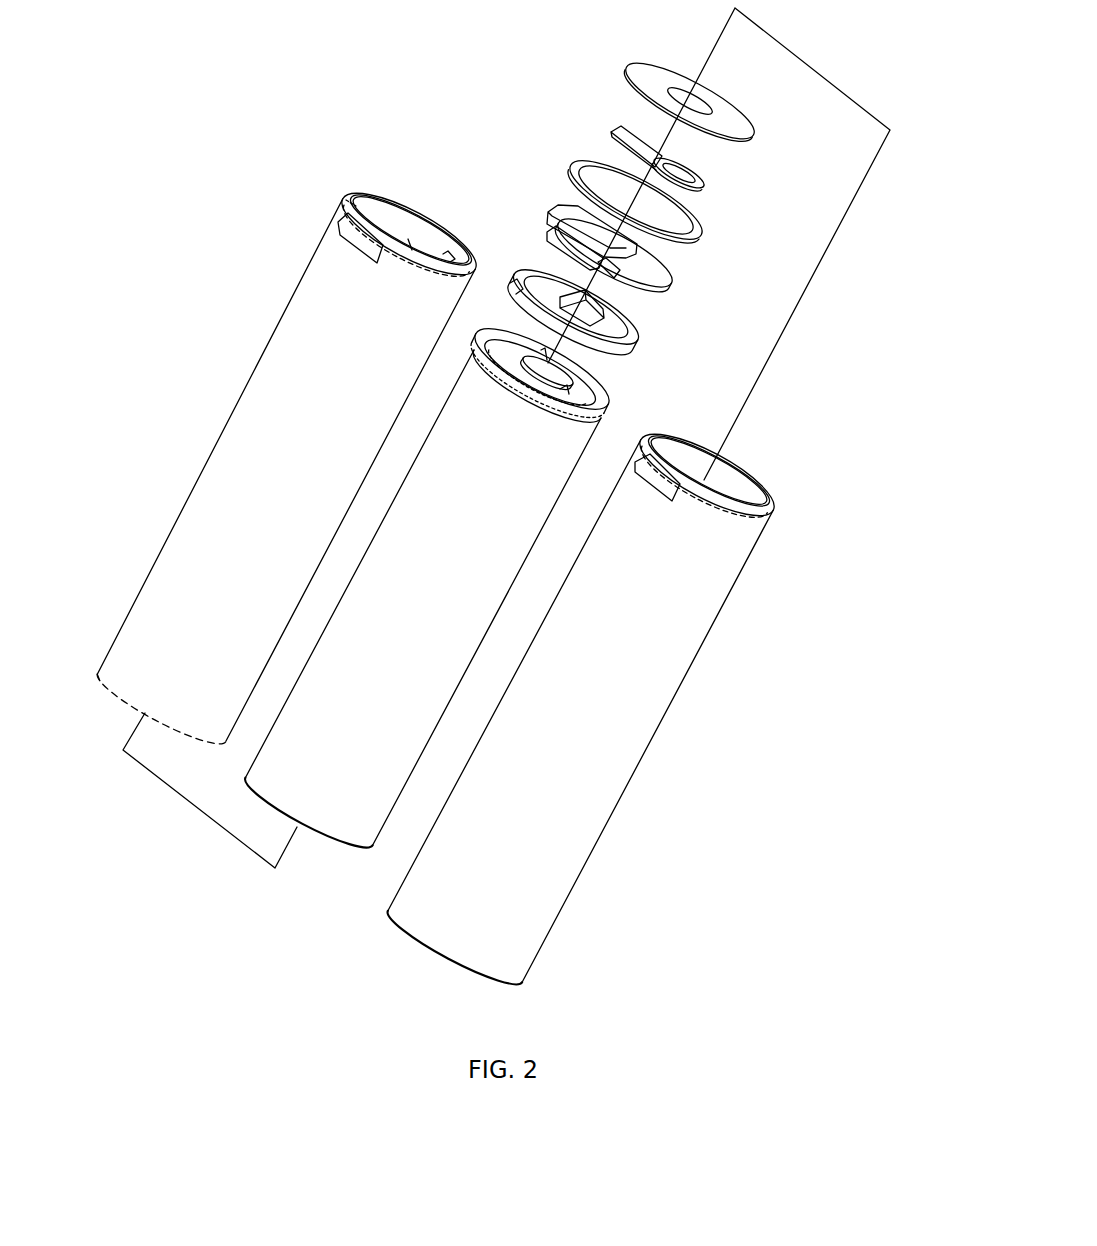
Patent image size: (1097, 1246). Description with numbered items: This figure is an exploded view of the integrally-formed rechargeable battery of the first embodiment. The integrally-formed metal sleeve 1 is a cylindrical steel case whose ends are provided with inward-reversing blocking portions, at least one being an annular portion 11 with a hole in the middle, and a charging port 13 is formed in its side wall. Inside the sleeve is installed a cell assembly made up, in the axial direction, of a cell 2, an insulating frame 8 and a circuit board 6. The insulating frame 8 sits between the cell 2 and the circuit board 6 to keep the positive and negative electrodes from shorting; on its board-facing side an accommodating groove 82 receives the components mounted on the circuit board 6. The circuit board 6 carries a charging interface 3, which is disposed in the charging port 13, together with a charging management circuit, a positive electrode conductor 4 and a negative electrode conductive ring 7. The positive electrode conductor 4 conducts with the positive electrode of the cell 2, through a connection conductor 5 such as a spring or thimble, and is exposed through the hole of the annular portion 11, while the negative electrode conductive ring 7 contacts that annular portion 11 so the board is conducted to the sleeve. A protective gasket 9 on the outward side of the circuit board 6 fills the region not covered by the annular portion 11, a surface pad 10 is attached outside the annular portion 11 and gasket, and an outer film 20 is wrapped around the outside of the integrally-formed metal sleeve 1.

The integrally-formed metal sleeve 1 is at (215, 505).
The cell 2 is at (345, 813).
The charging interface 3 is at (553, 235).
The positive electrode conductor 4 is at (601, 228).
The connection conductor 5 is at (612, 277).
The circuit board 6 is at (650, 268).
The negative electrode conductive ring 7 is at (688, 227).
The insulating frame 8 is at (620, 352).
The accommodating groove 82 is at (540, 293).
The protective gasket 9 is at (622, 135).
The surface pad 10 is at (652, 78).
The annular portion 11 is at (353, 208).
The charging port 13 is at (355, 250).
The outer film 20 is at (625, 697).